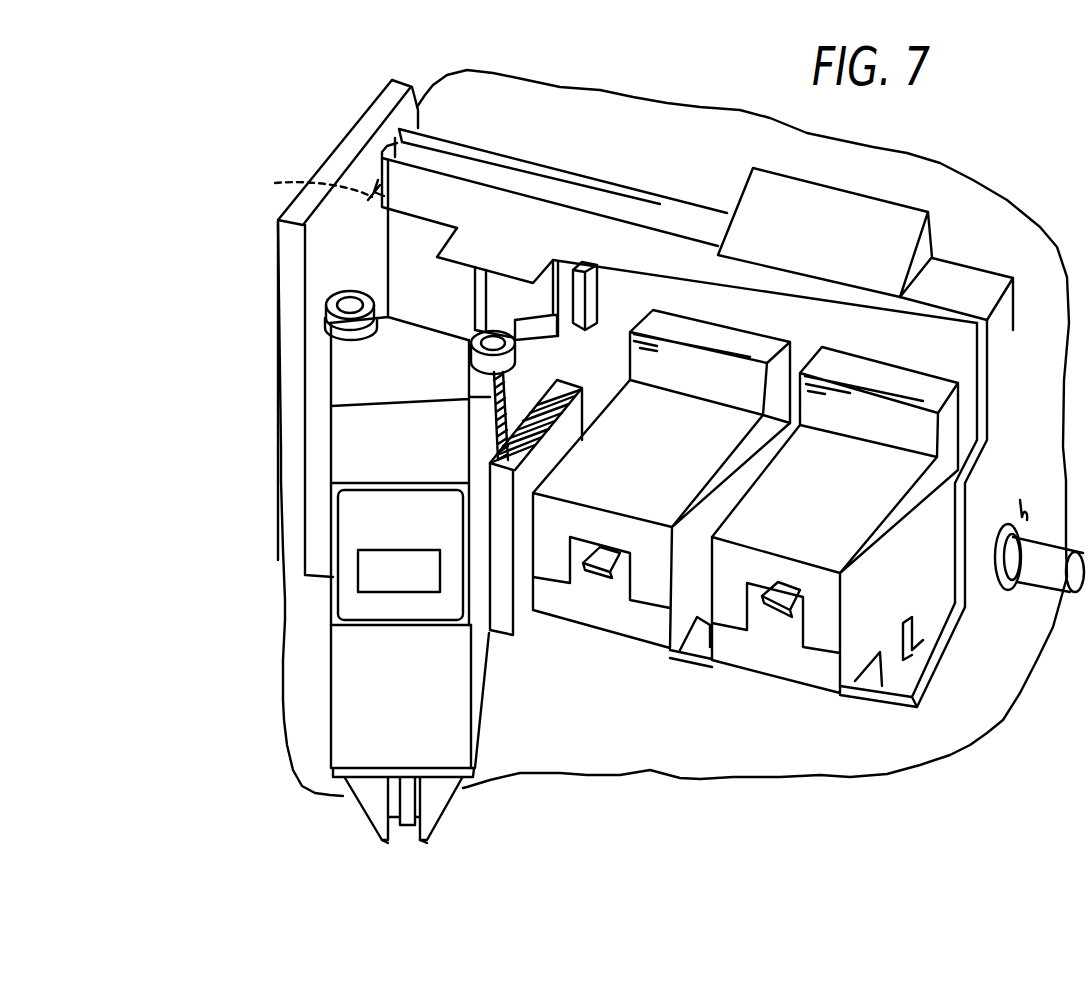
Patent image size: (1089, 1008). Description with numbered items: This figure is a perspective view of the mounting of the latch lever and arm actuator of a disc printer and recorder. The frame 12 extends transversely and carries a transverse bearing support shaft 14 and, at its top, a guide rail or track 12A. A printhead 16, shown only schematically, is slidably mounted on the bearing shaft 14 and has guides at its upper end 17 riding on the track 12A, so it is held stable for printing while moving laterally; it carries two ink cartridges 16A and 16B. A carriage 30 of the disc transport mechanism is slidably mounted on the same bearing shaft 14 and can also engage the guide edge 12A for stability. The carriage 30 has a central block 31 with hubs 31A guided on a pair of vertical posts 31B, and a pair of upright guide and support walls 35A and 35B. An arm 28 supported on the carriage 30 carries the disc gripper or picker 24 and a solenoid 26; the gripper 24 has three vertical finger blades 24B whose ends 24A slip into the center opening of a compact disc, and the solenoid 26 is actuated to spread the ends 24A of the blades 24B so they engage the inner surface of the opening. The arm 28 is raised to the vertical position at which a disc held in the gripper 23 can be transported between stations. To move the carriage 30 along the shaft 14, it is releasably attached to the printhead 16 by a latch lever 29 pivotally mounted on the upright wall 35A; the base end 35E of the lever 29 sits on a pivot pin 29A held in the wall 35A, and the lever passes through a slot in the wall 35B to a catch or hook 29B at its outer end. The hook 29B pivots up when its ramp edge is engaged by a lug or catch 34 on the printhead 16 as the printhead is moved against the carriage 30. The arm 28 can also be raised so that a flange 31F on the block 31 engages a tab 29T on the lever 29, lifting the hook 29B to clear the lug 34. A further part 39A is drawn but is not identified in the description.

The frame 12 is at (963, 712).
The guide rail 12A is at (640, 192).
The bearing support shaft 14 is at (1040, 578).
The printhead 16 is at (874, 642).
The ink cartridge 16A is at (617, 613).
The ink cartridge 16B is at (777, 653).
The upper end 17 is at (943, 273).
The gripper 23 is at (325, 783).
The disc gripper 24 is at (452, 807).
The ends 24A is at (427, 842).
The finger blades 24B is at (373, 814).
The solenoid 26 is at (340, 573).
The arm 28 is at (480, 637).
The latch lever 29 is at (640, 260).
The pivot pin 29A is at (302, 183).
The hook 29B is at (620, 265).
The tab 29T is at (532, 262).
The carriage 30 is at (282, 381).
The central block 31 is at (360, 442).
The hubs 31A is at (360, 345).
The vertical posts 31B is at (348, 300).
The flange 31F is at (493, 393).
The lug 34 is at (590, 282).
The upright guide and support wall 35A is at (290, 333).
The upright guide and support wall 35B is at (497, 510).
The base end 35E is at (392, 140).
The plate top edge 39A is at (420, 105).